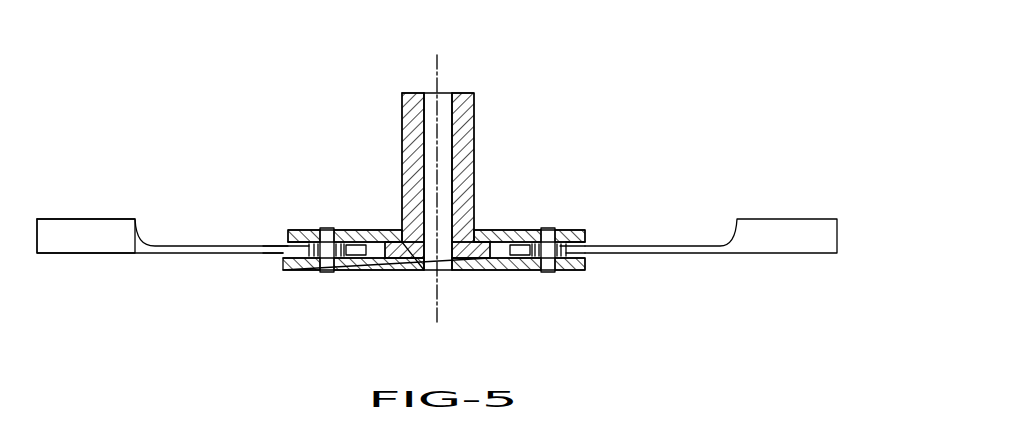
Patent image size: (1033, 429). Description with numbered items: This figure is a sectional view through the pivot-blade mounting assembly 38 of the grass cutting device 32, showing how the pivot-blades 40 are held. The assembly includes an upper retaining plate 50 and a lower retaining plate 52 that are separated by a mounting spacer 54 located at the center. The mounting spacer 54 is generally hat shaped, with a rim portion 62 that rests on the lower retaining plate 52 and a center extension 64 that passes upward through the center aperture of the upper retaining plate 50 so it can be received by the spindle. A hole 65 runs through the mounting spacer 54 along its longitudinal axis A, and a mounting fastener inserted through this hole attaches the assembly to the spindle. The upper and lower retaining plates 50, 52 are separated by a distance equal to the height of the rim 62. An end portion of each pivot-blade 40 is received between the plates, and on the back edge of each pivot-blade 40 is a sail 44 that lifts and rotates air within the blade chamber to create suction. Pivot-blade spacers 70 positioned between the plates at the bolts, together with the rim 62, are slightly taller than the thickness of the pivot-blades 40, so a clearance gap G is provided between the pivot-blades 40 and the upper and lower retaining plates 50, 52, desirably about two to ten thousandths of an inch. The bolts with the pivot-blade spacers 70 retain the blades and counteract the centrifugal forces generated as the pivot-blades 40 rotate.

The grass cutting device 32 is at (335, 145).
The pivot-blade mounting assembly 38 is at (590, 176).
The pivot-blade 40 is at (117, 255).
The sail 44 is at (93, 219).
The upper retaining plate 50 is at (340, 230).
The lower retaining plate 52 is at (403, 270).
The mounting spacer 54 is at (474, 122).
The rim portion 62 is at (370, 247).
The center extension 64 is at (402, 110).
The hole 65 is at (449, 86).
The pivot-blade spacer 70 is at (315, 272).
The longitudinal axis A is at (437, 72).
The clearance gap G is at (290, 242).